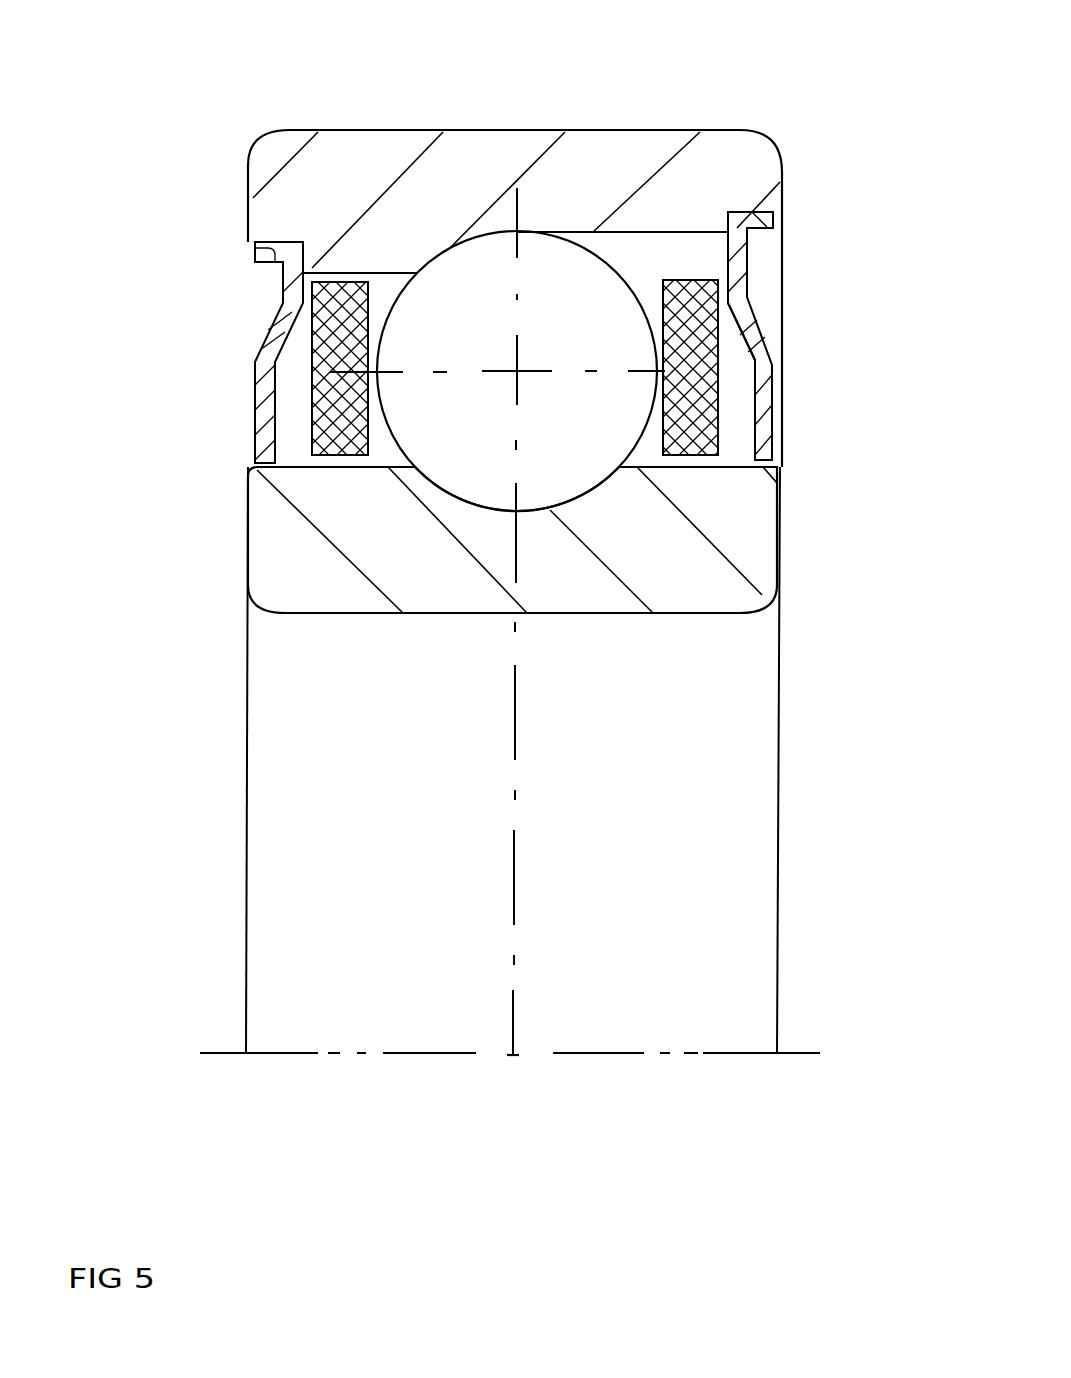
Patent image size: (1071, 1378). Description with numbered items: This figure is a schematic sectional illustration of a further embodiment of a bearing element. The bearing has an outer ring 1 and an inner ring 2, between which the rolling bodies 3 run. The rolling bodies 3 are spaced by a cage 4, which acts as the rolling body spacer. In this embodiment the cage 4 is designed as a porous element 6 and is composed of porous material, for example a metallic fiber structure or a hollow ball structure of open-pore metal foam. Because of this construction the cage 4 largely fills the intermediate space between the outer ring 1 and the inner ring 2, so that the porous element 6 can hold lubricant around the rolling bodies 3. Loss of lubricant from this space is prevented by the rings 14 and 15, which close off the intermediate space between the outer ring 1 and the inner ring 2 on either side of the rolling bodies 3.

The outer ring 1 is at (735, 138).
The inner ring 2 is at (752, 542).
The rolling bodies 3 is at (547, 262).
The cage 4 is at (720, 412).
The porous element 6 is at (720, 343).
The ring 14 is at (258, 403).
The ring 15 is at (742, 309).